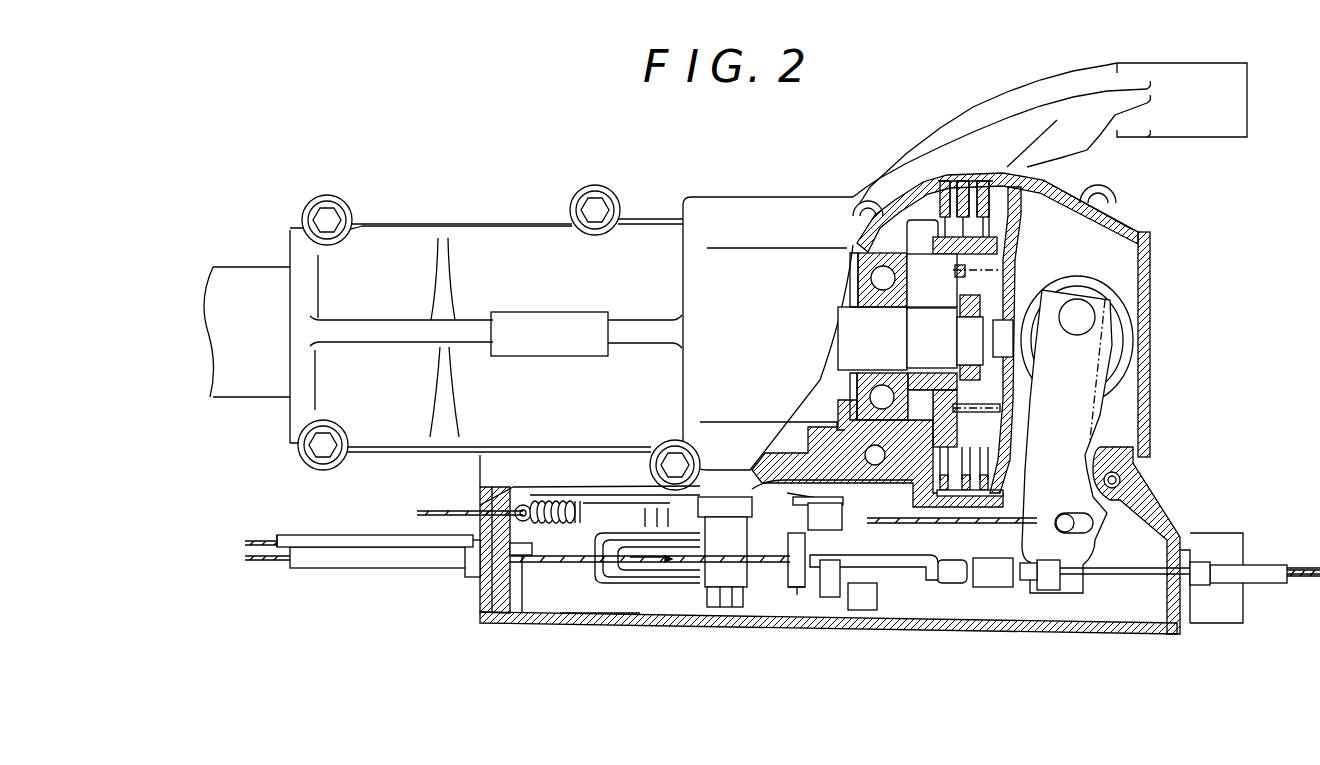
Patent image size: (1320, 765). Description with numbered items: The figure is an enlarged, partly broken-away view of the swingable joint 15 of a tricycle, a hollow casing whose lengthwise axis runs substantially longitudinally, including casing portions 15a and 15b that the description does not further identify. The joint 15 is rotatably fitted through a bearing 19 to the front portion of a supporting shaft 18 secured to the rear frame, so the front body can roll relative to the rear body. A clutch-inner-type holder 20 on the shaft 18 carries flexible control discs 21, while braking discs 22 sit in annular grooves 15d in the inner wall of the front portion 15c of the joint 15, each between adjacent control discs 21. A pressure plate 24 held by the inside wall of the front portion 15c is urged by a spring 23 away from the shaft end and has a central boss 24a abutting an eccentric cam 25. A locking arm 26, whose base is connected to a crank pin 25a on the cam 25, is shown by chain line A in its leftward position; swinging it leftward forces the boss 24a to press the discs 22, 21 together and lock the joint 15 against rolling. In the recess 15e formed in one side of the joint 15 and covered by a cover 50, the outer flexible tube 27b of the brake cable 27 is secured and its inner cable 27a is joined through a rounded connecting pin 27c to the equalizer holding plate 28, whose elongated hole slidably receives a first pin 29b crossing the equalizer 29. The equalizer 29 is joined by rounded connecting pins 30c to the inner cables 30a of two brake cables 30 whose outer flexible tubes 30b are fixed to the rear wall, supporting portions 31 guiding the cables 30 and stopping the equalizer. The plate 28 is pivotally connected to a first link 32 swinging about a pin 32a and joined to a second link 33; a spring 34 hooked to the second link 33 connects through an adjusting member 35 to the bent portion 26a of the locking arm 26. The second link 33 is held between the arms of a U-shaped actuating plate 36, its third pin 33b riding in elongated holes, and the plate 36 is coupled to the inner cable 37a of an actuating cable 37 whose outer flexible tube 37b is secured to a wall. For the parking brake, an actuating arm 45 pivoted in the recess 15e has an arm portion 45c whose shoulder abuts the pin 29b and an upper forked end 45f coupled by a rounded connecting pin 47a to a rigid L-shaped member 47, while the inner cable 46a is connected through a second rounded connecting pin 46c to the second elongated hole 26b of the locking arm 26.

The joint 15 is at (657, 242).
The mounting bracket portion 15a is at (1228, 80).
The rib 15b is at (552, 313).
The front portion 15c is at (1130, 221).
The annular groove 15d is at (950, 181).
The recess 15e is at (595, 592).
The supporting shaft 18 is at (853, 343).
The bearing 19 is at (857, 300).
The holder 20 is at (870, 262).
The control discs 21 is at (928, 230).
The braking discs 22 is at (975, 181).
The spring 23 is at (1000, 410).
The pressure plate 24 is at (1015, 258).
The boss 24a is at (1060, 317).
The eccentric cam 25 is at (1127, 343).
The crank pin 25a is at (1090, 313).
The locking arm 26 is at (1097, 415).
The bent and suspended portion 26a is at (1048, 593).
The second elongated hole 26b is at (1108, 508).
The brake cable 27 is at (1265, 583).
The inner cable 27a is at (1125, 580).
The outer flexible tube 27b is at (1273, 570).
The rounded connecting pin 27c is at (990, 587).
The equalizer holding plate 28 is at (952, 583).
The equalizer 29 is at (903, 580).
The first pin 29b is at (862, 610).
The brake cables 30 is at (315, 568).
The inner cables 30a is at (777, 580).
The outer flexible tubes 30b is at (368, 568).
The rounded connecting pins 30c is at (828, 597).
The supporting portions 31 is at (797, 595).
The first link 32 is at (685, 575).
The pin 32a is at (727, 607).
The second link 33 is at (693, 580).
The third pin 33b is at (645, 575).
The spring 34 is at (760, 560).
The adjusting member 35 is at (1028, 583).
The actuating plate 36 is at (628, 580).
The actuating cable 37 is at (322, 535).
The inner cable 37a is at (548, 560).
The outer flexible tube 37b is at (347, 540).
The actuating arm 45 is at (795, 495).
The arm portion 45c is at (905, 600).
The upper forked end 45f is at (800, 497).
The inner cable 46a is at (960, 522).
The second rounded connecting pin 46c is at (1087, 533).
The L-shaped member 47 is at (590, 520).
The rounded connecting pin 47a is at (795, 590).
The cover 50 is at (1082, 633).
The chain line A is at (1032, 463).